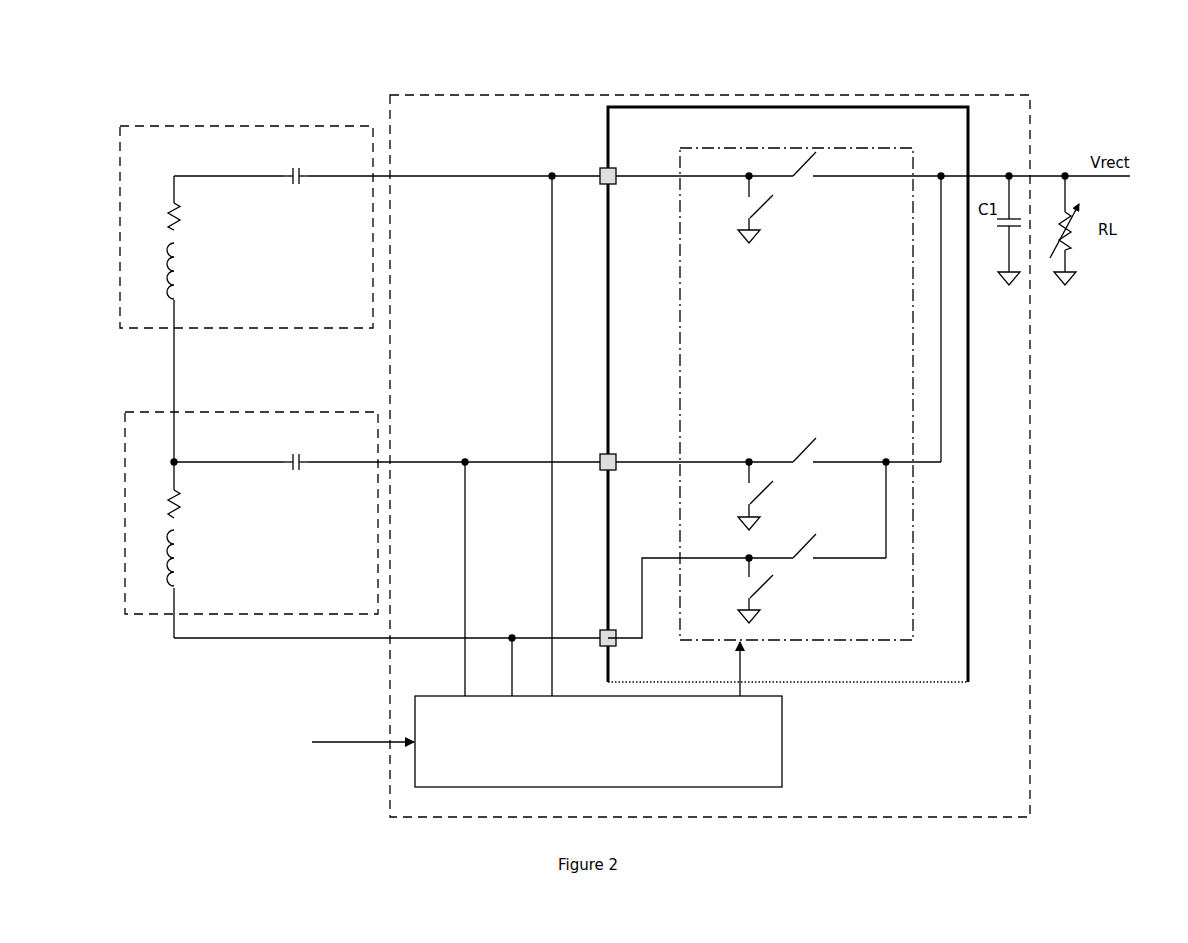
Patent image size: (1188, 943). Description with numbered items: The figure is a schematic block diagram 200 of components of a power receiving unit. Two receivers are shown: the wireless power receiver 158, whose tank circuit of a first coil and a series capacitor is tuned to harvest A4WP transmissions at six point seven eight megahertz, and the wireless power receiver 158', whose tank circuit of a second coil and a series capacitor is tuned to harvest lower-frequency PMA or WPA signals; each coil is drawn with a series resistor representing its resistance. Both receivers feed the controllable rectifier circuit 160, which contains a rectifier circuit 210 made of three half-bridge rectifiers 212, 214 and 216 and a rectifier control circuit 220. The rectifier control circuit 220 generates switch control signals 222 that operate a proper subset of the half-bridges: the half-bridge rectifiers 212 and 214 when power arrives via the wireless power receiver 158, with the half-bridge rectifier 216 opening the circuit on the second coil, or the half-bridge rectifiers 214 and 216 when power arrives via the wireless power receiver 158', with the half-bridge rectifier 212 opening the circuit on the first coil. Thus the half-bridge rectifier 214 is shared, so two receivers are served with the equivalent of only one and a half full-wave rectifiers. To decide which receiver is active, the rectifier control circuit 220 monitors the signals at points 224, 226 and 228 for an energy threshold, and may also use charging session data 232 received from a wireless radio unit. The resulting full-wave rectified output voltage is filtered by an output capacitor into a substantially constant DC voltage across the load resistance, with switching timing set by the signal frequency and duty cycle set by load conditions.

The schematic block diagram 200 is at (90, 72).
The wireless power receiver 158 is at (246, 227).
The wireless power receiver 158' is at (251, 513).
The controllable rectifier circuit 160 is at (760, 456).
The rectifier circuit 210 is at (796, 394).
The half-bridge rectifier 212 is at (788, 207).
The half-bridge rectifier 214 is at (795, 483).
The half-bridge rectifier 216 is at (795, 578).
The rectifier control circuit 220 is at (598, 741).
The switch control signals 222 is at (745, 663).
The monitoring point 224 is at (464, 536).
The monitoring point 226 is at (550, 269).
The monitoring point 228 is at (508, 686).
The charging session data 232 is at (310, 743).